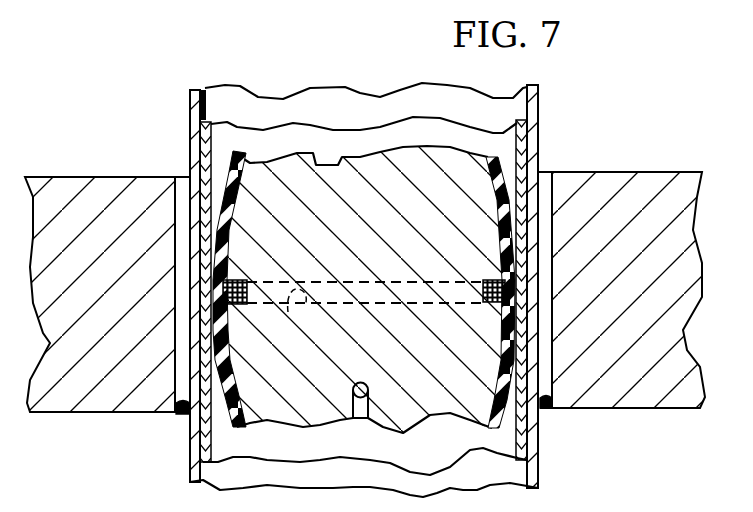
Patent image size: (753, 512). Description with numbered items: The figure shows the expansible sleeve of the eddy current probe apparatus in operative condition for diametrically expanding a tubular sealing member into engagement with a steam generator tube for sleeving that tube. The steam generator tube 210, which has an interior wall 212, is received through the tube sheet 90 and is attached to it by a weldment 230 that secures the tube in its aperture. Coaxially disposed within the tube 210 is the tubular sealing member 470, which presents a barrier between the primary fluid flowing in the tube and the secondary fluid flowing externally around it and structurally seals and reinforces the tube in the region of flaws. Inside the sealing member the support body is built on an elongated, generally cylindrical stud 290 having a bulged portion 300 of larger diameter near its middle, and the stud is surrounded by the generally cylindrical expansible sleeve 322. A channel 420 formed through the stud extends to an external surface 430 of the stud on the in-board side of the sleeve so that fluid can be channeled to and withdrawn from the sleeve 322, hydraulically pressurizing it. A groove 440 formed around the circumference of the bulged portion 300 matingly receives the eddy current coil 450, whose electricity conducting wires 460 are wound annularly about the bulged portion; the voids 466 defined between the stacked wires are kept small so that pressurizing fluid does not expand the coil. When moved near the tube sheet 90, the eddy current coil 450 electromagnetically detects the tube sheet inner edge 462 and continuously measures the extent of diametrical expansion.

The tube sheet 90 is at (668, 190).
The steam generator tube 210 is at (532, 125).
The interior wall 212 is at (207, 88).
The weldment 230 is at (185, 415).
The stud 290 is at (242, 172).
The bulged portion 300 is at (362, 175).
The expansible sleeve 322 is at (499, 165).
The channel 420 is at (363, 426).
The external surface 430 is at (503, 368).
The groove 440 is at (289, 314).
The eddy current coil 450 is at (492, 304).
The electricity conducting wires 460 is at (485, 280).
The tube sheet inner edge 462 is at (180, 197).
The voids 466 is at (235, 280).
The tubular sealing member 470 is at (523, 440).